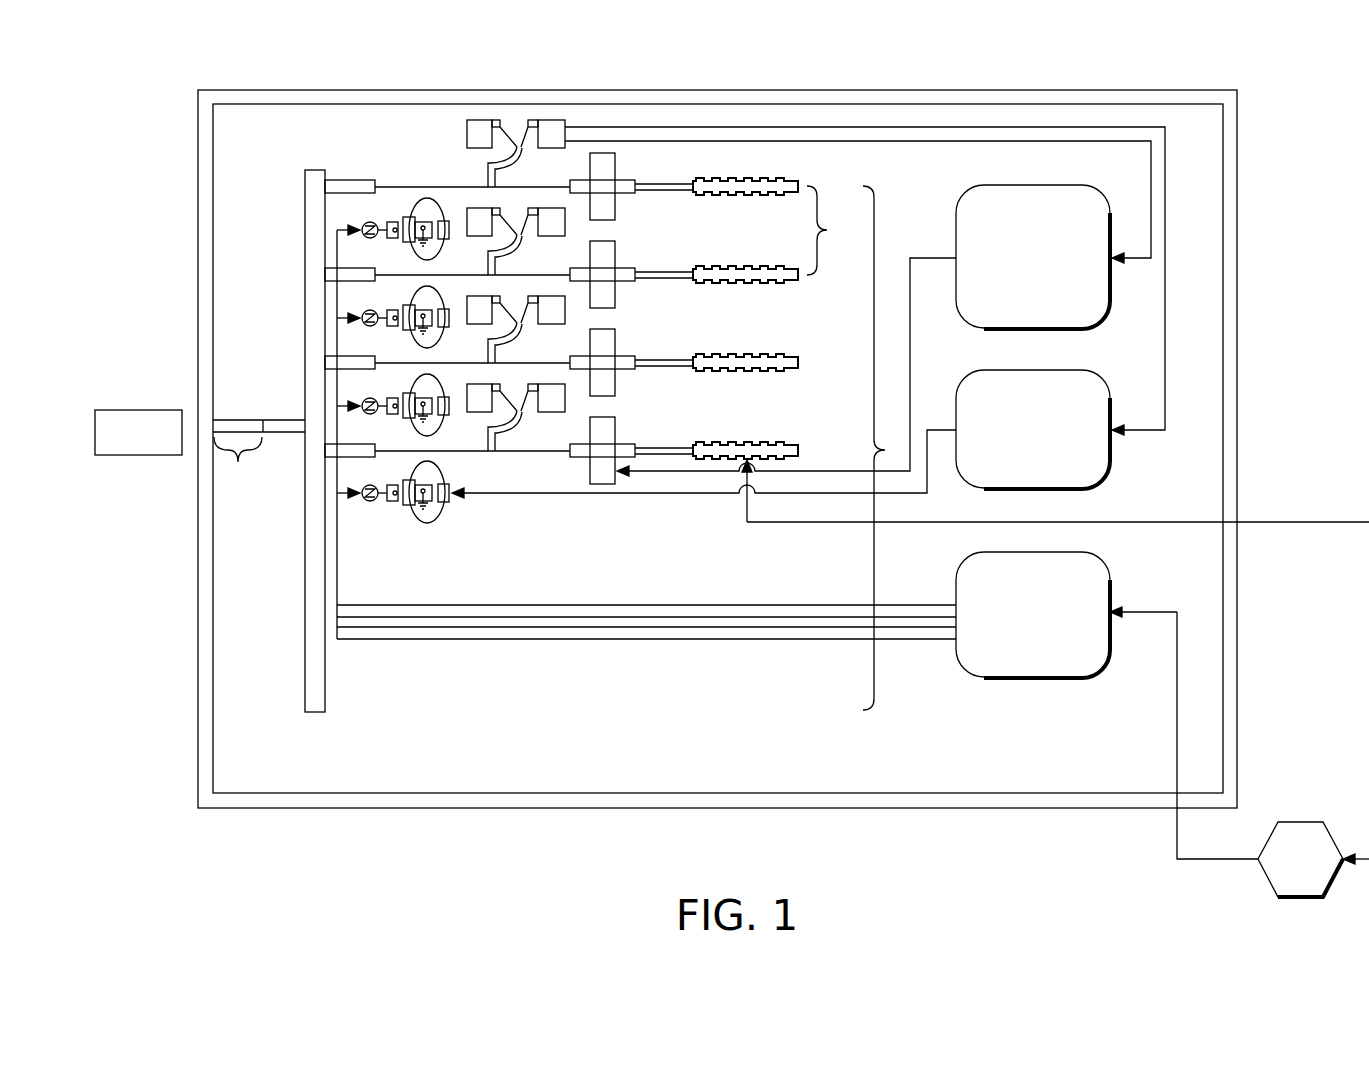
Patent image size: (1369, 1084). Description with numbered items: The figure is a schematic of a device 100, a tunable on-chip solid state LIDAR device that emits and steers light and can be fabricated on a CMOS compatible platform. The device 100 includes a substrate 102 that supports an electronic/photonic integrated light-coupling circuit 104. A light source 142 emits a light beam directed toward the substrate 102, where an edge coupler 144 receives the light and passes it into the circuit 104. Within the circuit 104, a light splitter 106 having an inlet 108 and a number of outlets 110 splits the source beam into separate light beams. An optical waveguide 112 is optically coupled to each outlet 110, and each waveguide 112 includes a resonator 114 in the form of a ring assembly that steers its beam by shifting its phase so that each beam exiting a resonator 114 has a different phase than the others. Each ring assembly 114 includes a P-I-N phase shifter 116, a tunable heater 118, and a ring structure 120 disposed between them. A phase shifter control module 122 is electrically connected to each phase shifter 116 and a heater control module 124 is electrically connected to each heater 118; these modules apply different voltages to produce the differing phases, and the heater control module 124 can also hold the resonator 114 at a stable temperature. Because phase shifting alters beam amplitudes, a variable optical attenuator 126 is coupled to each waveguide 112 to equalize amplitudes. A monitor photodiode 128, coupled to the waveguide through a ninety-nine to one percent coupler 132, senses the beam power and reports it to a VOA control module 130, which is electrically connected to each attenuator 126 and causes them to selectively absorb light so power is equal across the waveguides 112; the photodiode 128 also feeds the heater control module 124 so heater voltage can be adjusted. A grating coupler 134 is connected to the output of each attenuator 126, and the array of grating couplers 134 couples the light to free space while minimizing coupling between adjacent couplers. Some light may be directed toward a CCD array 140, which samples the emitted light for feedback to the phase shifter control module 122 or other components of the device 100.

The device 100 is at (150, 84).
The substrate 102 is at (1197, 118).
The electronic/photonic integrated light-coupling circuit 104 is at (765, 166).
The light splitter 106 is at (305, 217).
The inlet 108 is at (272, 418).
The outlets 110 is at (352, 185).
The optical waveguide 112 is at (413, 183).
The resonator 114 is at (451, 531).
The P-I-N phase shifter 116 is at (399, 502).
The tunable heater 118 is at (447, 506).
The ring structure 120 is at (420, 523).
The phase shifter control module 122 is at (1112, 588).
The heater control module 124 is at (1112, 455).
The variable optical attenuator 126 is at (616, 162).
The monitor photodiode 128 is at (520, 108).
The VOA control module 130 is at (1035, 185).
The 99%-1% coupler 132 is at (488, 177).
The grating coupler 134 is at (836, 230).
The CCD array 140 is at (1300, 820).
The light source 142 is at (140, 408).
The edge coupler 144 is at (238, 464).